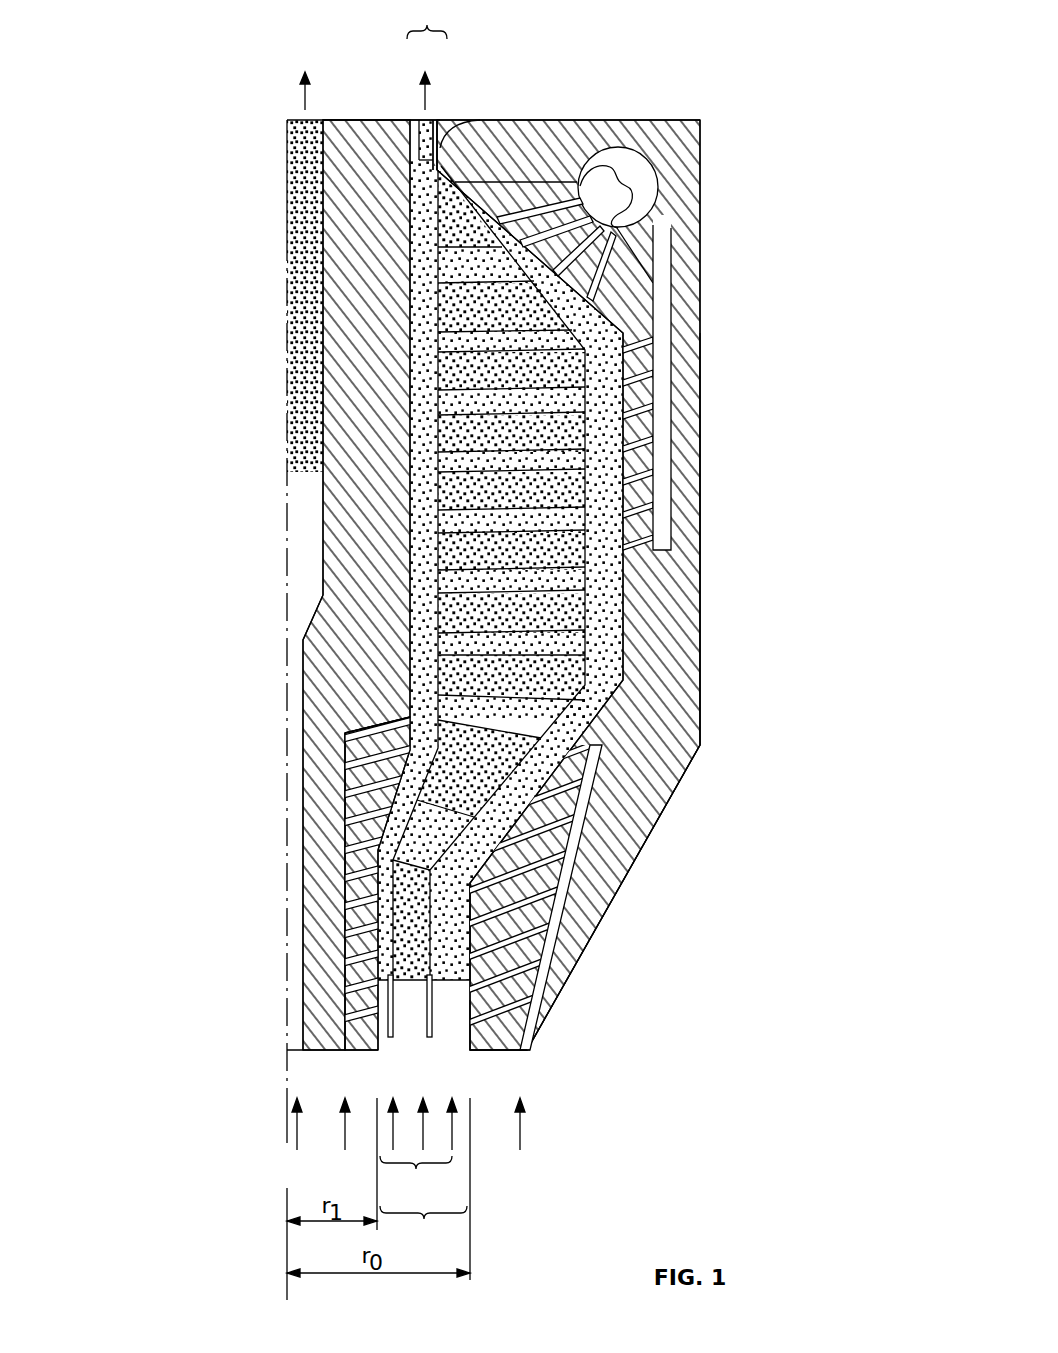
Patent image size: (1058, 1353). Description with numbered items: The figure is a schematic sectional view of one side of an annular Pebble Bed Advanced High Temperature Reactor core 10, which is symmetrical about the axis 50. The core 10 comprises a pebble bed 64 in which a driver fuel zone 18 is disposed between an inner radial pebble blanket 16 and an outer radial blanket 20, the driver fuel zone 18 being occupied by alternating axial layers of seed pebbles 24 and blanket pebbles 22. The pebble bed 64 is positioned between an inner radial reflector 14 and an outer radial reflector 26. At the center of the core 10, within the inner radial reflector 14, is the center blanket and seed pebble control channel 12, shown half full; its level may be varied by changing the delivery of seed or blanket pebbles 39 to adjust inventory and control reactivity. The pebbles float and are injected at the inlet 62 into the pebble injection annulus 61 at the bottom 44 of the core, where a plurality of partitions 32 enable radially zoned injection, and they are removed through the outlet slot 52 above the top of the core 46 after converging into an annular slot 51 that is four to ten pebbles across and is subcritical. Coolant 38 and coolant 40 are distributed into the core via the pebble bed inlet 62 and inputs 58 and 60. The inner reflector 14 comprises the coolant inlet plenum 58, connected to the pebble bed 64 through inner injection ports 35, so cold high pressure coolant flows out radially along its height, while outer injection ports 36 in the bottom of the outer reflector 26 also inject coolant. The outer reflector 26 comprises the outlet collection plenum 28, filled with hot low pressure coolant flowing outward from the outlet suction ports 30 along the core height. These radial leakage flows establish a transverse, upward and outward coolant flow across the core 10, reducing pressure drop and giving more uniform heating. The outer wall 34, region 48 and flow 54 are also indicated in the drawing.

The annular PB-AHTR core 10 is at (198, 74).
The center blanket and seed pebble control channel 12 is at (300, 478).
The inner radial reflector 14 is at (390, 118).
The inner radial pebble blanket 16 is at (413, 118).
The driver fuel zone 18 is at (431, 118).
The outer radial blanket 20 is at (441, 118).
The blanket pebbles 22 is at (489, 558).
The seed pebbles 24 is at (489, 573).
The outer radial reflector 26 is at (640, 120).
The outlet collection plenum 28 is at (665, 246).
The outlet suction ports 30 is at (594, 186).
The partitions 32 is at (391, 1040).
The outer housing wall 34 is at (662, 812).
The inner injection ports 35 is at (350, 845).
The outer injection ports 36 is at (548, 897).
The coolant 38 is at (418, 1148).
The seed or blanket pebbles 39 is at (300, 1139).
The coolant 40 is at (431, 1139).
The bottom of the core 44 is at (480, 1052).
The top of the core 46 is at (553, 130).
The outer housing 48 is at (705, 597).
The axis 50 is at (283, 580).
The annular slot 51 is at (480, 124).
The outlet slot 52 is at (427, 21).
The outlet flow 54 is at (366, 78).
The coolant inlet plenum 58 is at (345, 1052).
The input 60 is at (520, 1048).
The pebble injection annulus 61 is at (472, 1013).
The pebble bed inlet 62 is at (423, 1189).
The pebble bed 64 is at (625, 625).